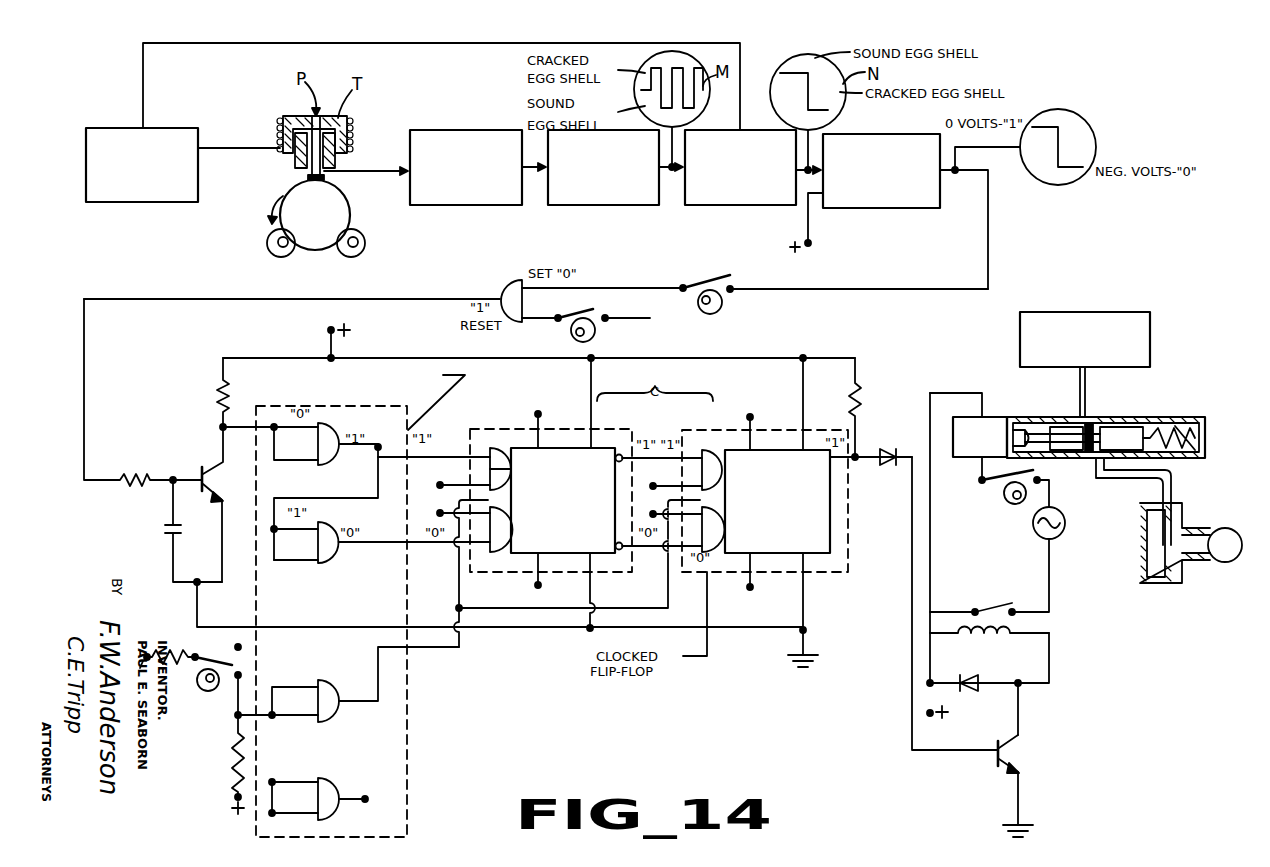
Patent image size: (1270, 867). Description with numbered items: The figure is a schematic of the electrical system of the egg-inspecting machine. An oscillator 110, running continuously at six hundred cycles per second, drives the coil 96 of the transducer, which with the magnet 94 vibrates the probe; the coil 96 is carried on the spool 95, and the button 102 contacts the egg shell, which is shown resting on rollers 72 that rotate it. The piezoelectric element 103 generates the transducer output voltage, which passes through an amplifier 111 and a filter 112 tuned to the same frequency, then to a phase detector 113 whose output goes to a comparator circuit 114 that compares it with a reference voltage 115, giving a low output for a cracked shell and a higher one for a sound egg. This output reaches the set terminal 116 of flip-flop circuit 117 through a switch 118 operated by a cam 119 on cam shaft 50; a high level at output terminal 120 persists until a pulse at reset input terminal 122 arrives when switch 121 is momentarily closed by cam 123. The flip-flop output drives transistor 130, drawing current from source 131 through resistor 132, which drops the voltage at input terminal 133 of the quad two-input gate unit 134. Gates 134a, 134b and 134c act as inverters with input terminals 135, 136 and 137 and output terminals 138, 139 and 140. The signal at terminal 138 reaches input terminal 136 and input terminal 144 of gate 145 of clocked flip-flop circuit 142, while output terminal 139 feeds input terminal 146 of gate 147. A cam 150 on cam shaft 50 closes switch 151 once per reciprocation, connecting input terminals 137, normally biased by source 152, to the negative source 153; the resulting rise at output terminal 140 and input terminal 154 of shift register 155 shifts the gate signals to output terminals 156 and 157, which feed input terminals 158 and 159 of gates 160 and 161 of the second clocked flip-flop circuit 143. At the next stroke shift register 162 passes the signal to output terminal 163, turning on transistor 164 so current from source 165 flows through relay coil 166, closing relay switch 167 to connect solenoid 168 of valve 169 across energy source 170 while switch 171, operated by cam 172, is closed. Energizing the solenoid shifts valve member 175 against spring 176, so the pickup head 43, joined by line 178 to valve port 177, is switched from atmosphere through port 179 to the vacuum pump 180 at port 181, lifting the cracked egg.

The pickup head 43 is at (1238, 560).
The cam shaft 50 is at (592, 338).
The rollers 72 is at (347, 257).
The magnet 94 is at (330, 172).
The spool 95 is at (300, 116).
The coil 96 is at (283, 140).
The button 102 is at (330, 182).
The piezoelectric element 103 is at (310, 177).
The oscillator 110 is at (117, 128).
The amplifier 111 is at (465, 130).
The filter 112 is at (582, 205).
The phase detector 113 is at (738, 205).
The comparator circuit 114 is at (900, 208).
The reference voltage 115 is at (810, 241).
The set terminal 116 is at (520, 280).
The flip-flop circuit 117 is at (500, 285).
The switch 118 is at (710, 278).
The cam 119 is at (724, 300).
The output terminal 120 is at (490, 299).
The switch 121 is at (590, 311).
The reset input terminal 122 is at (535, 322).
The cam 123 is at (608, 322).
The transistor 130 is at (210, 464).
The source 131 is at (331, 330).
The resistor 132 is at (214, 390).
The input terminal 133 is at (257, 427).
The quad 2-input gates 134 is at (412, 710).
The gate 134a is at (355, 405).
The gate 134b is at (330, 563).
The gate 134c is at (345, 660).
The input terminal 135 is at (318, 460).
The input terminal 136 is at (318, 560).
The input terminals 137 is at (318, 687).
The output terminal 138 is at (340, 446).
The output terminal 139 is at (340, 543).
The output terminal 140 is at (340, 701).
The clocked flip-flop circuit 142 is at (560, 425).
The second clocked flip-flop circuit 143 is at (775, 428).
The input terminal 144 is at (490, 457).
The gate 145 is at (490, 448).
The input terminal 146 is at (490, 542).
The gate 147 is at (498, 552).
The cam 150 is at (219, 688).
The switch 151 is at (233, 655).
The source 152 is at (236, 795).
The negative source 153 is at (147, 657).
The input terminal 154 is at (509, 478).
The shift register 155 is at (563, 500).
The output terminal 156 is at (615, 462).
The output terminal 157 is at (616, 545).
The input terminal 158 is at (702, 458).
The input terminal 159 is at (700, 546).
The gate 160 is at (706, 450).
The gate 161 is at (708, 552).
The shift register 162 is at (777, 501).
The output terminal 163 is at (836, 460).
The transistor 164 is at (1020, 762).
The source 165 is at (930, 713).
The relay coil 166 is at (1012, 630).
The relay switch 167 is at (996, 607).
The solenoid 168 is at (968, 425).
The valve 169 is at (1066, 417).
The energy source 170 is at (1066, 515).
The switch 171 is at (1000, 475).
The cam 172 is at (1004, 491).
The valve member 175 is at (1091, 423).
The spring 176 is at (1195, 422).
The valve port 177 is at (1099, 460).
The line 178 is at (1172, 496).
The port 179 is at (1140, 417).
The vacuum pump 180 is at (1130, 312).
The port 181 is at (1090, 417).